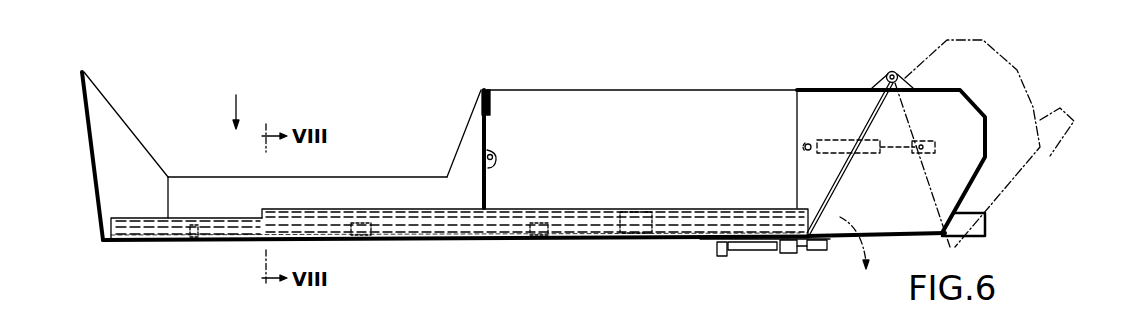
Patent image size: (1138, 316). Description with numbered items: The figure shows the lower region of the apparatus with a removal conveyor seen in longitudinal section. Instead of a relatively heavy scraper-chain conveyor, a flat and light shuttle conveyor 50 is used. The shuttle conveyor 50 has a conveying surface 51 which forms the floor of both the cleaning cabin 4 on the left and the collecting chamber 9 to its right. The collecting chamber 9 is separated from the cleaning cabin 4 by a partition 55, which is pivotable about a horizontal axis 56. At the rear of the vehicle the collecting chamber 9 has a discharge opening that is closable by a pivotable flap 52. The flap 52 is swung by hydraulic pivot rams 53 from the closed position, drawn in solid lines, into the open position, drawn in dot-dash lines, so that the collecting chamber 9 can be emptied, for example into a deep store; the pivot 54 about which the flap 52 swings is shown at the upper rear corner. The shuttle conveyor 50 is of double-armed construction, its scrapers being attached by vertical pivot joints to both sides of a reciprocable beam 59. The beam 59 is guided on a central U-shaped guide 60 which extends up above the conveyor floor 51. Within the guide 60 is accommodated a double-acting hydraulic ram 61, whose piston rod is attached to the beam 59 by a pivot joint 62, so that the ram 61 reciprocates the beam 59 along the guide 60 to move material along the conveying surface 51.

The cleaning cabin 4 is at (195, 161).
The collecting chamber 9 is at (696, 163).
The shuttle conveyor 50 is at (571, 221).
The conveying surface 51 is at (403, 241).
The pivotable flap 52 is at (960, 176).
The hydraulic pivot rams 53 is at (833, 142).
The pivot 54 is at (889, 70).
The partition 55 is at (488, 128).
The horizontal axis 56 is at (498, 157).
The reciprocable beam 59 is at (393, 216).
The U-shaped guide 60 is at (173, 233).
The double-acting hydraulic ram 61 is at (355, 231).
The pivot joint 62 is at (540, 231).